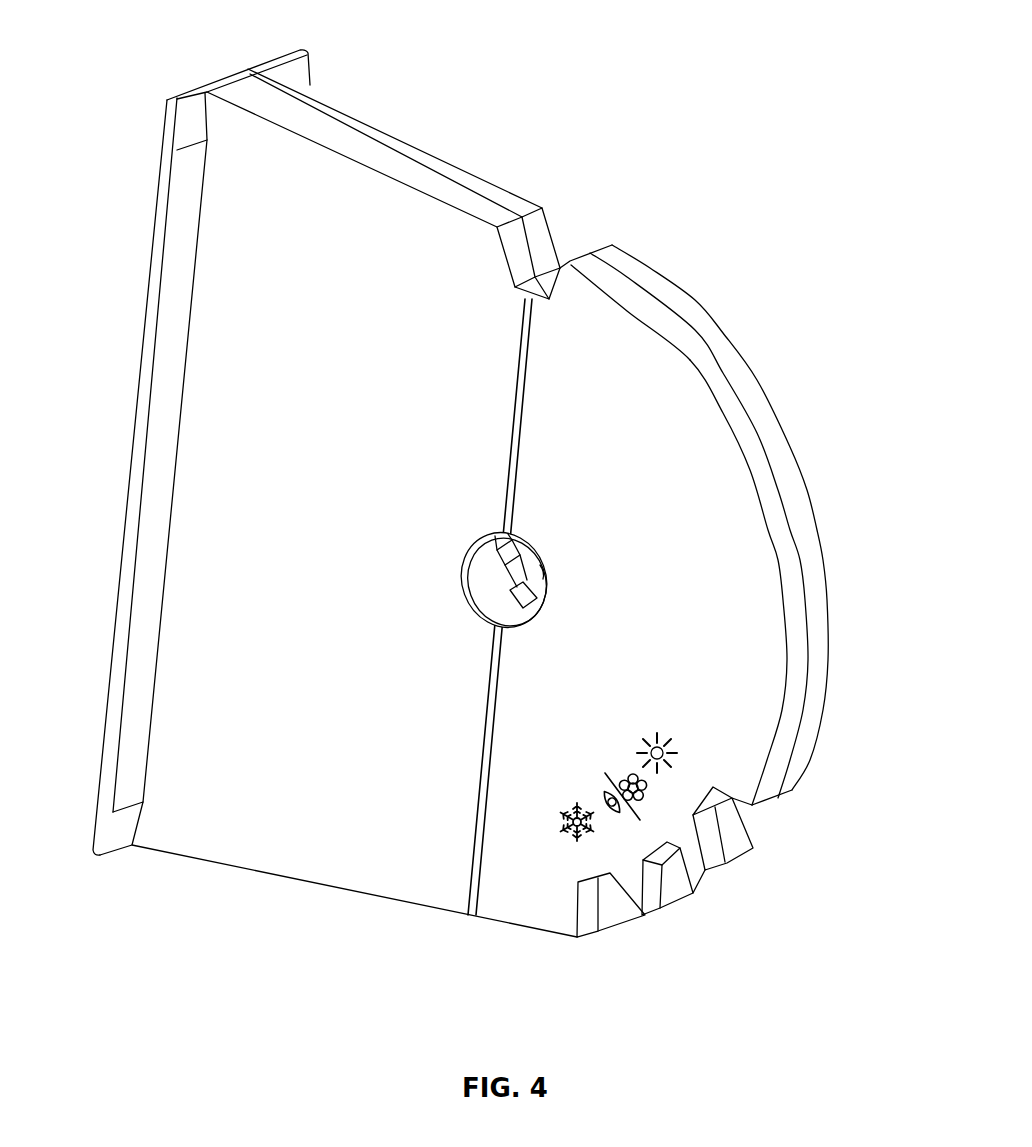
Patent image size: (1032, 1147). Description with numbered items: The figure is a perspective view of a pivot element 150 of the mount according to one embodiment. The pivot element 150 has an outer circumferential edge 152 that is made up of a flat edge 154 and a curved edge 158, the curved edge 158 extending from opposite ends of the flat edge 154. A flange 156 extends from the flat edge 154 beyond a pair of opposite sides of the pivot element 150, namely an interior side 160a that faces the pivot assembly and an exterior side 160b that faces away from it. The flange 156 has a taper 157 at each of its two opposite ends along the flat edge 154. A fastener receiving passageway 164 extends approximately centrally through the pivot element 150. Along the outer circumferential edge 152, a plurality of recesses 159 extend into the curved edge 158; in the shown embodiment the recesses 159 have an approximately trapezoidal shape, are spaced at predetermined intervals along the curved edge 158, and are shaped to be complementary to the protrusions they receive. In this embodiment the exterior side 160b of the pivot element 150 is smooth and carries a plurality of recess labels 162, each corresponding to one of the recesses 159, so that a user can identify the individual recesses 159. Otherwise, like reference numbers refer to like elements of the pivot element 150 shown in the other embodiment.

The pivot element 150 is at (716, 40).
The outer circumferential edge 152 is at (353, 122).
The flat edge 154 is at (212, 220).
The flange 156 is at (158, 297).
The taper 157 is at (192, 118).
The curved edge 158 is at (790, 512).
The recesses 159 is at (737, 833).
The interior side 160a is at (503, 183).
The exterior side 160b is at (578, 363).
The recess labels 162 is at (558, 765).
The fastener receiving passageway 164 is at (507, 593).